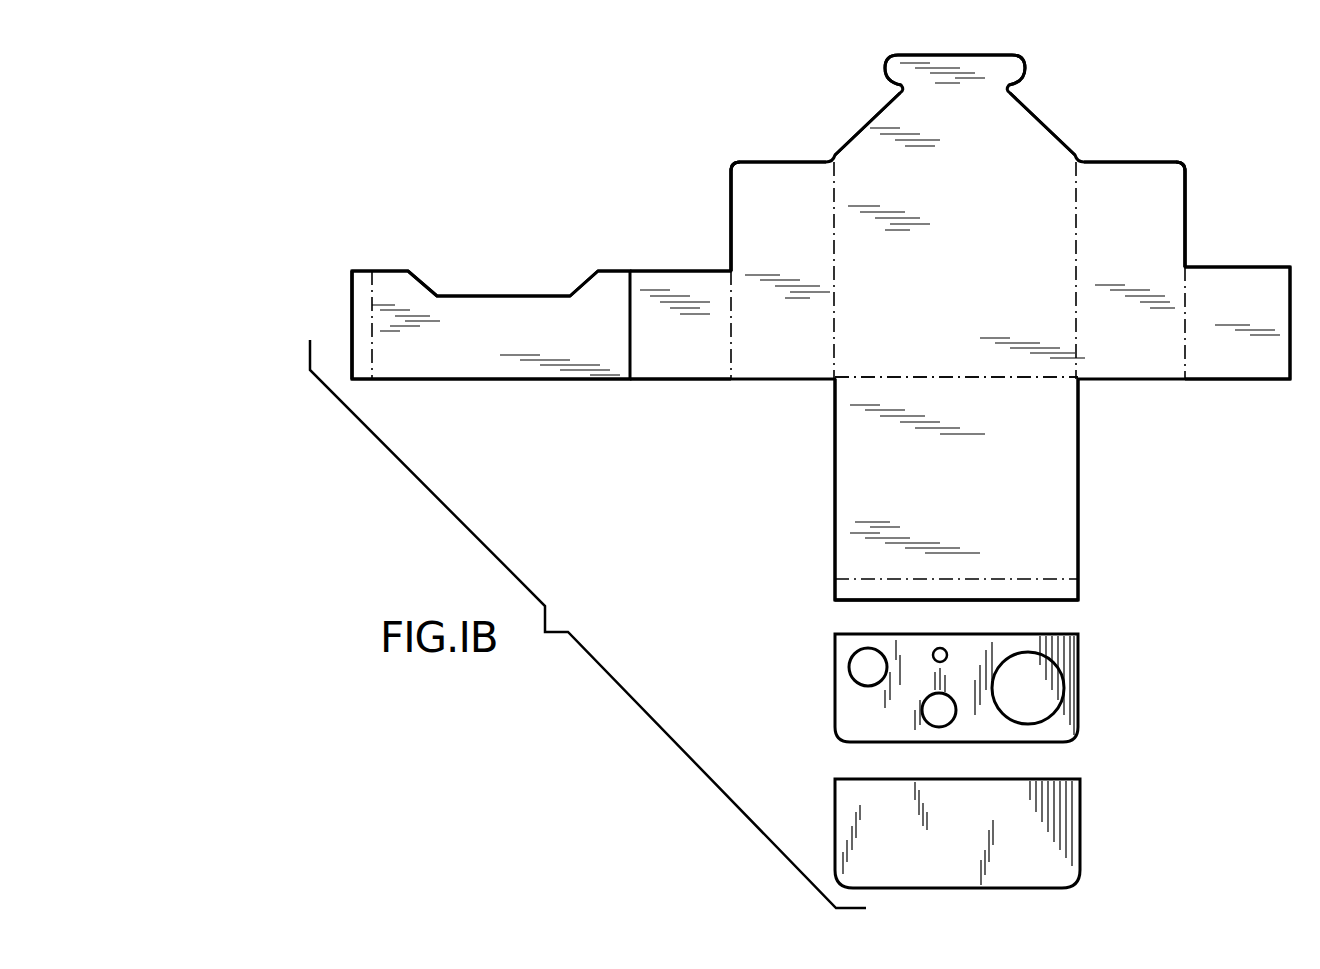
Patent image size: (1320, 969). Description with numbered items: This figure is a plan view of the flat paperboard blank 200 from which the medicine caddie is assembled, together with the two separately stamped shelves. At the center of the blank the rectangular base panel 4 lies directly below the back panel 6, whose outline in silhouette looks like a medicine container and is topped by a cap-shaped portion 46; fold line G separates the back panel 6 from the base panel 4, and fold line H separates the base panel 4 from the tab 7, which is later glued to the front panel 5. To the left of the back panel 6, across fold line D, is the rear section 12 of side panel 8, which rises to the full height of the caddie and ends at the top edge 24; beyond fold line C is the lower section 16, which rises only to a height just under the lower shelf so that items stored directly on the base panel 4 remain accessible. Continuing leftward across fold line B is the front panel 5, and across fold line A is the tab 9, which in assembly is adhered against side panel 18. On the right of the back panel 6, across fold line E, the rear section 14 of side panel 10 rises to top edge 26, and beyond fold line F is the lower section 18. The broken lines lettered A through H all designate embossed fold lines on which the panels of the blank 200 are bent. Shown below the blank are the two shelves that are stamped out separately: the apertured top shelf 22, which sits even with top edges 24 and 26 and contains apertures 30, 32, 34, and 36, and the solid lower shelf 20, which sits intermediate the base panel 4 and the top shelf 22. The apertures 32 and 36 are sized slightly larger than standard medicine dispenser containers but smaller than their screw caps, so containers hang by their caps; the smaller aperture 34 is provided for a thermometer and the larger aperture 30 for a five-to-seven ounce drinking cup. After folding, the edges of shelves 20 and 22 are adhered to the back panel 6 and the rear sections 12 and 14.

The paperboard blank 200 is at (690, 76).
The bottle cap shaped tab 46 is at (960, 56).
The front panel 5 is at (482, 378).
The tab 9 is at (352, 324).
The fold line A is at (373, 362).
The fold line B is at (632, 362).
The lower section of side panel 16 is at (702, 364).
The fold line C is at (733, 356).
The rear section of side panel 12 is at (792, 212).
The side panel 8 is at (730, 234).
The top edge of side 24 is at (740, 162).
The fold line D is at (840, 195).
The back panel 6 is at (968, 276).
The fold line E is at (1066, 196).
The rear section of side panel 14 is at (1136, 210).
The top edge of side 26 is at (1172, 160).
The side panel 10 is at (1186, 240).
The fold line F is at (1180, 361).
The lower section of side panel 18 is at (1213, 368).
The fold line G is at (984, 372).
The base panel 4 is at (968, 486).
The fold line H is at (1020, 553).
The tab 7 is at (1065, 596).
The top shelf 22 is at (1065, 727).
The aperture 36 is at (856, 666).
The smaller aperture 34 is at (942, 648).
The aperture 32 is at (942, 722).
The larger aperture 30 is at (1052, 688).
The lower shelf 20 is at (1060, 846).